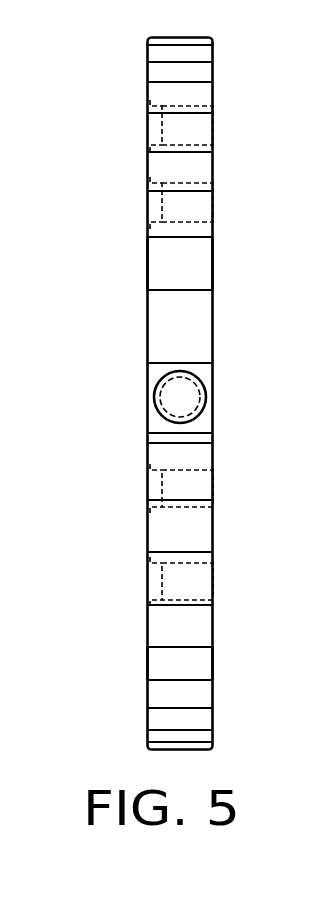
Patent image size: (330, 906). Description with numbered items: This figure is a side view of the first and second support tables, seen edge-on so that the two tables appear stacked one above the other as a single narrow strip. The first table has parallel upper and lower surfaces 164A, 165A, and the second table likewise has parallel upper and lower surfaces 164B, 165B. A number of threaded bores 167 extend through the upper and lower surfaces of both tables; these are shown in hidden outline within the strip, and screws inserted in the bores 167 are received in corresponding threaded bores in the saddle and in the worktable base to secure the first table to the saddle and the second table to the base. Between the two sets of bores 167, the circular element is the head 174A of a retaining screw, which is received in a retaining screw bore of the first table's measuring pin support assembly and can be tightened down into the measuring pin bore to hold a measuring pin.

The upper surface 164A is at (147, 271).
The lower surface 165A is at (213, 275).
The upper surface 164B is at (147, 662).
The lower surface 165B is at (213, 663).
The threaded bores 167 is at (180, 121).
The head 174A is at (201, 412).